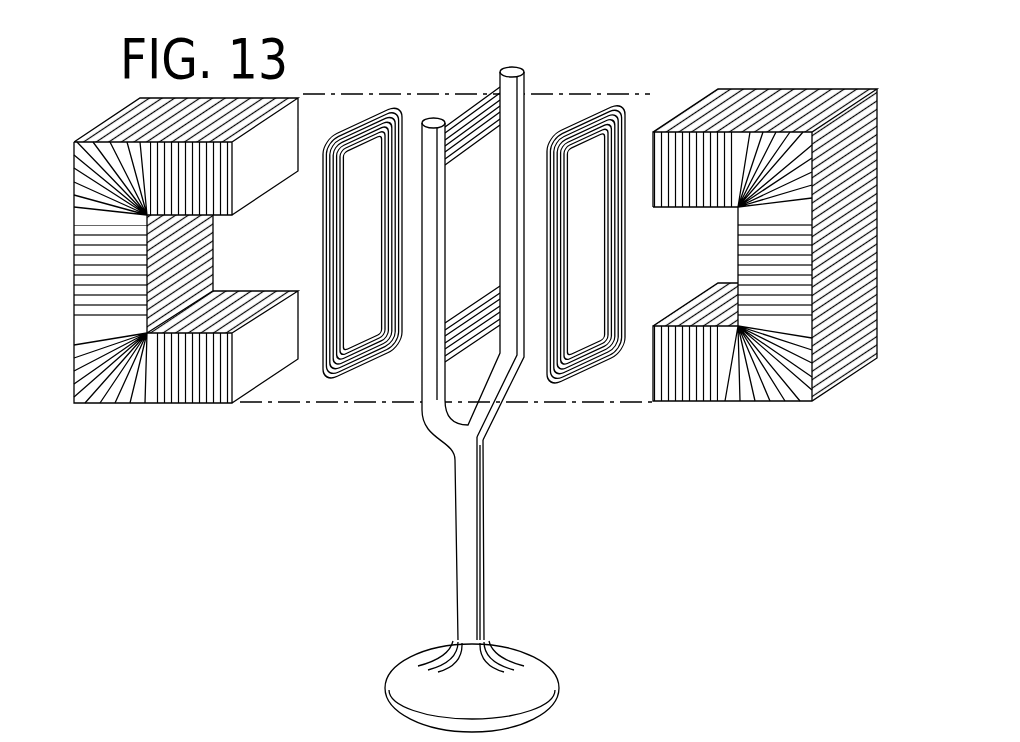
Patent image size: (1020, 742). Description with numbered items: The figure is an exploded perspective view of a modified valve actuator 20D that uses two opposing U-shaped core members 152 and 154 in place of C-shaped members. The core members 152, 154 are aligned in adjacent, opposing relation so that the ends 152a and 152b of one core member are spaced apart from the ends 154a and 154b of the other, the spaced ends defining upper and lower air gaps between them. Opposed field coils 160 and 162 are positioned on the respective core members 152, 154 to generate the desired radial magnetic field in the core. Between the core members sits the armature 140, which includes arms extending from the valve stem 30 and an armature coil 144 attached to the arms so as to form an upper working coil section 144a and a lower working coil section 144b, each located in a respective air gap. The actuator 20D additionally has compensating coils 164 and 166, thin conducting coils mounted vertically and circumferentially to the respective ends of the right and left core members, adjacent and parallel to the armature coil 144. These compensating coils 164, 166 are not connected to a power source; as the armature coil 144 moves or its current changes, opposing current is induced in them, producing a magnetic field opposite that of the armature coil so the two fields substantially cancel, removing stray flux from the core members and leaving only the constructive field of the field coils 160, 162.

The valve actuator 20D is at (277, 465).
The valve stem 30 is at (482, 493).
The armature 140 is at (503, 66).
The armature coil 144 is at (458, 120).
The upper working coil section 144a is at (469, 140).
The lower working coil section 144b is at (475, 318).
The core member 152 is at (823, 383).
The end of core member 152a is at (653, 170).
The end of core member 152b is at (653, 340).
The core member 154 is at (85, 405).
The end of core member 154a is at (288, 132).
The end of core member 154b is at (285, 322).
The field coil 160 is at (857, 353).
The field coil 162 is at (115, 380).
The compensating coil 164 is at (570, 120).
The compensating coil 166 is at (348, 124).